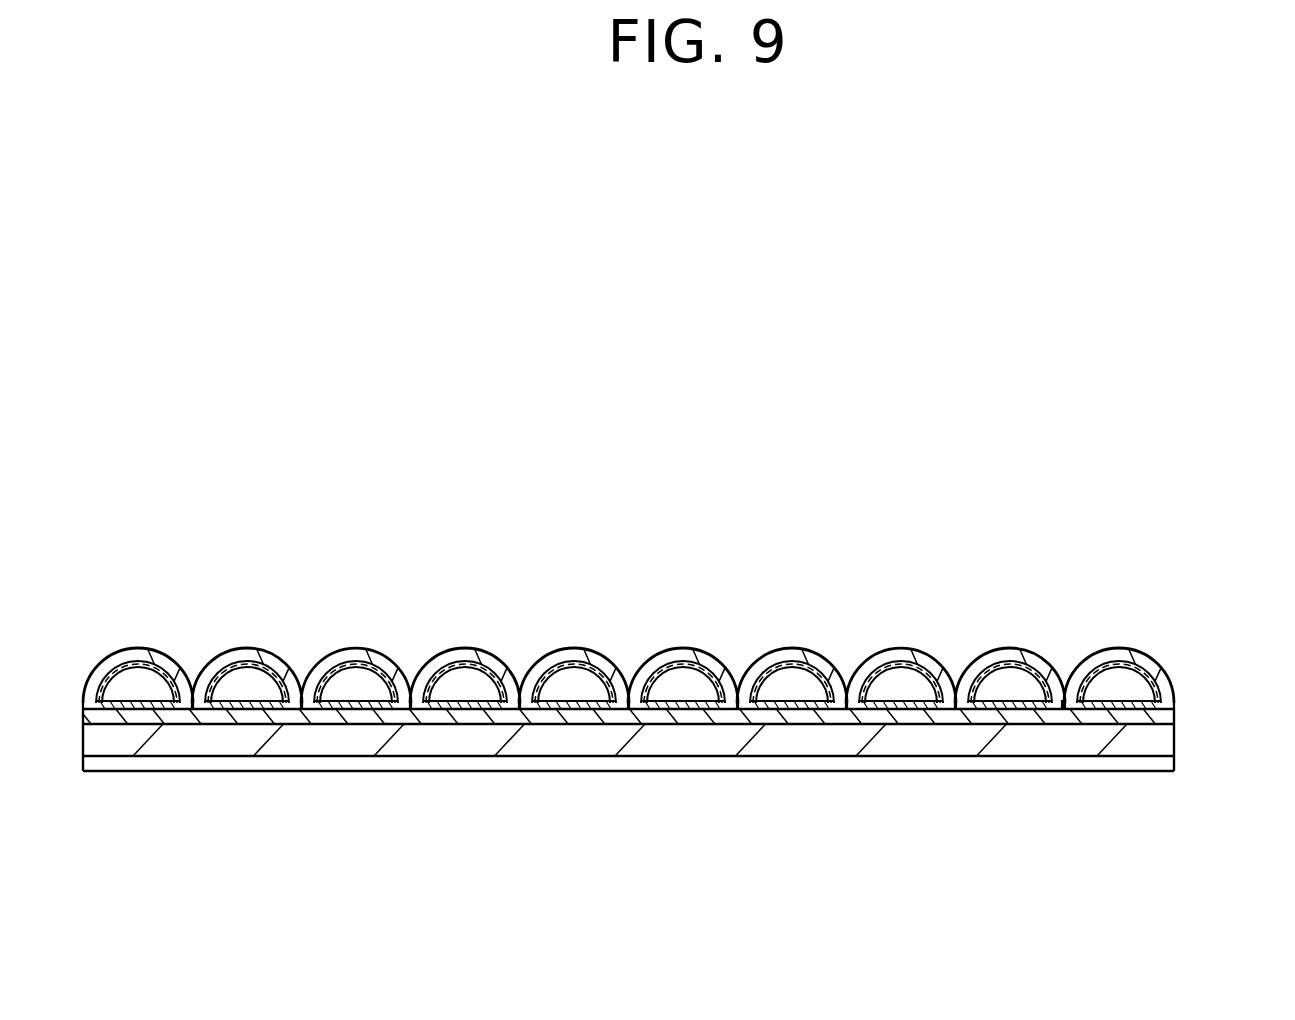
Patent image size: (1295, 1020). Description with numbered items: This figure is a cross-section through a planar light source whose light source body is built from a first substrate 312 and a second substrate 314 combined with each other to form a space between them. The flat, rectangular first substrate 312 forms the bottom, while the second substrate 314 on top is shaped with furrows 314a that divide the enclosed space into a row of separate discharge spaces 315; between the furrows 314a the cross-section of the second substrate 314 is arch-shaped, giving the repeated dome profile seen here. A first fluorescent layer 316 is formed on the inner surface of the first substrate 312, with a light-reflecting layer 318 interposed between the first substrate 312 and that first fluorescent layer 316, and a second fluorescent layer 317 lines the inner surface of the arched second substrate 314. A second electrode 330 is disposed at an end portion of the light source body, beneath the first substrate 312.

The first substrate 312 is at (1165, 740).
The second substrate 314 is at (1121, 651).
The furrows 314a is at (1062, 698).
The discharge spaces 315 is at (1137, 682).
The first fluorescent layer 316 is at (1012, 700).
The second fluorescent layer 317 is at (892, 661).
The light-reflecting layer 318 is at (1163, 714).
The second electrode 330 is at (1033, 765).